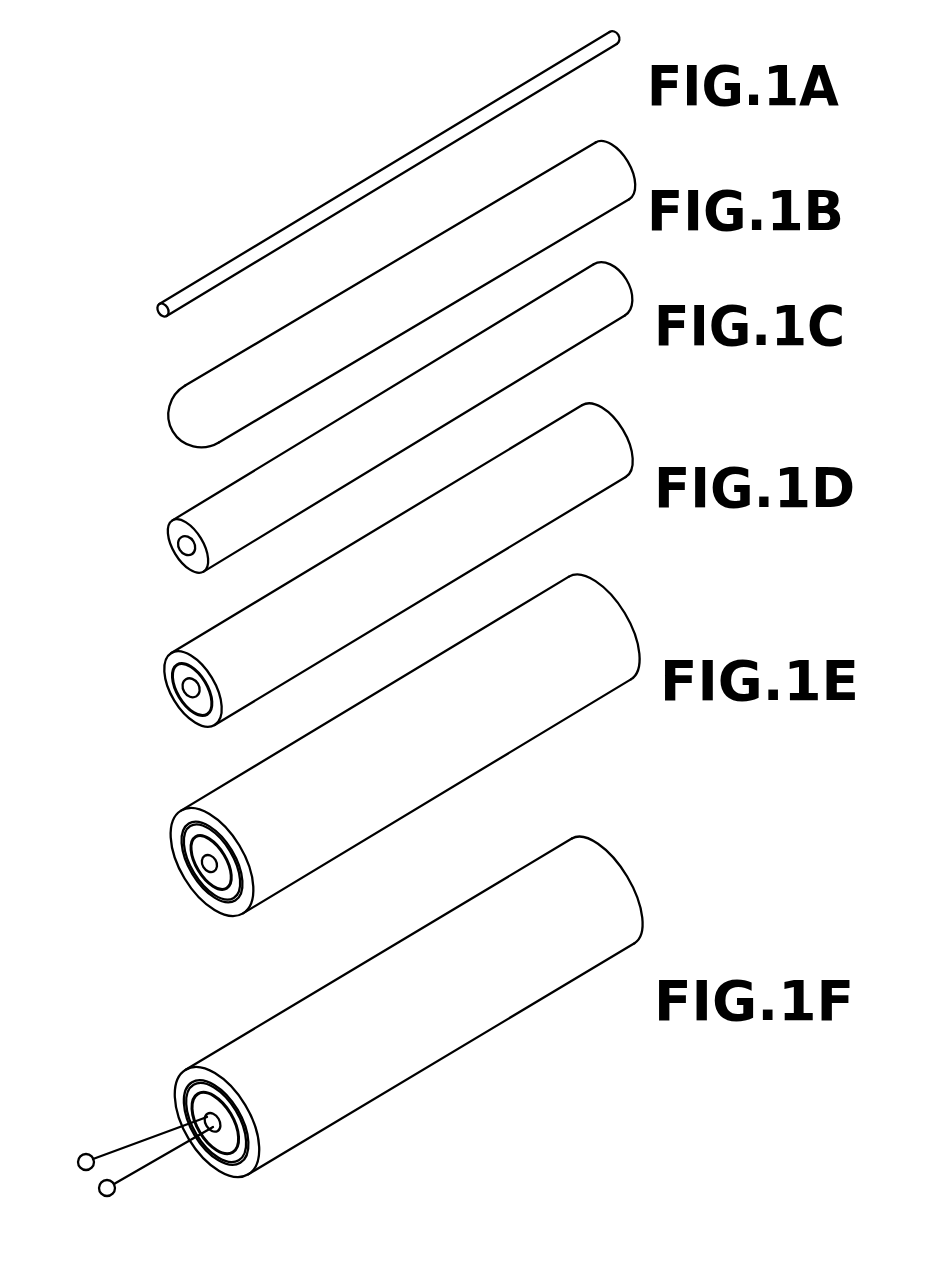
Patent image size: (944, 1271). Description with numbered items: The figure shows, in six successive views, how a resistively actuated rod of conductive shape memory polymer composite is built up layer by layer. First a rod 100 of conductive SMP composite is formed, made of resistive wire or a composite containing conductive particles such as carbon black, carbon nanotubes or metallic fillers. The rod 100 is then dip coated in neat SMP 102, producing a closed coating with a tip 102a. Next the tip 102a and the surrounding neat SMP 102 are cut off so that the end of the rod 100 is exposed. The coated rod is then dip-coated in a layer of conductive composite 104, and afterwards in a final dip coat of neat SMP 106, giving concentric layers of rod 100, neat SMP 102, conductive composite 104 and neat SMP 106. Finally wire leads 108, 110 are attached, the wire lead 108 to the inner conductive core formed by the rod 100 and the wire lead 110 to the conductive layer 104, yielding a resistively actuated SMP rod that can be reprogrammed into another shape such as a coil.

In FIG. 1A, the rod 100 is at (158, 309).
In FIG. 1C, the rod 100 is at (180, 552).
In FIG. 1D, the rod 100 is at (188, 689).
In FIG. 1E, the rod 100 is at (202, 864).
In FIG. 1F, the rod 100 is at (215, 1113).
In FIG. 1B, the neat SMP 102 is at (209, 378).
In FIG. 1C, the neat SMP 102 is at (191, 508).
In FIG. 1D, the neat SMP 102 is at (178, 672).
In FIG. 1E, the neat SMP 102 is at (196, 845).
In FIG. 1F, the neat SMP 102 is at (223, 1139).
In FIG. 1B, the tip 102a is at (167, 440).
In FIG. 1D, the conductive composite 104 is at (189, 646).
In FIG. 1E, the conductive composite 104 is at (188, 831).
In FIG. 1F, the conductive composite 104 is at (246, 1115).
In FIG. 1E, the neat SMP 106 is at (203, 793).
In FIG. 1F, the neat SMP 106 is at (241, 1038).
In FIG. 1F, the wire lead 108 is at (118, 1138).
In FIG. 1F, the wire lead 110 is at (143, 1170).